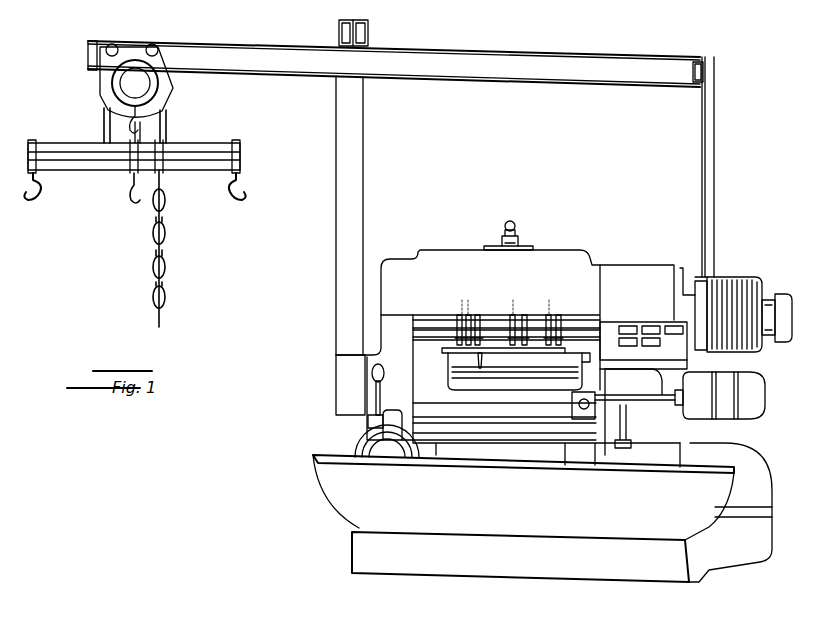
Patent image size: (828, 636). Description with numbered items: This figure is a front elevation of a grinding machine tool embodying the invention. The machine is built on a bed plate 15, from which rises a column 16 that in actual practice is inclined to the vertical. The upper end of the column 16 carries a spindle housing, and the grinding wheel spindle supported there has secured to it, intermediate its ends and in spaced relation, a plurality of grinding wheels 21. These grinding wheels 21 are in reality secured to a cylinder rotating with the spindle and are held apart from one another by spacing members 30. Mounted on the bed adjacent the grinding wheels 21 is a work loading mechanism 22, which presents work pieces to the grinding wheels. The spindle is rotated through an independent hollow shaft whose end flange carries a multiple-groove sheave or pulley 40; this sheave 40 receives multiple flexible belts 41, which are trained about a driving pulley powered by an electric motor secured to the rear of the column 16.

The bed plate 15 is at (352, 551).
The column 16 is at (381, 328).
The grinding wheels 21 is at (480, 306).
The work loading mechanism 22 is at (529, 362).
The spacing members 30 is at (490, 318).
The sheave or pulley 40 is at (786, 276).
The flexible belts 41 is at (748, 277).